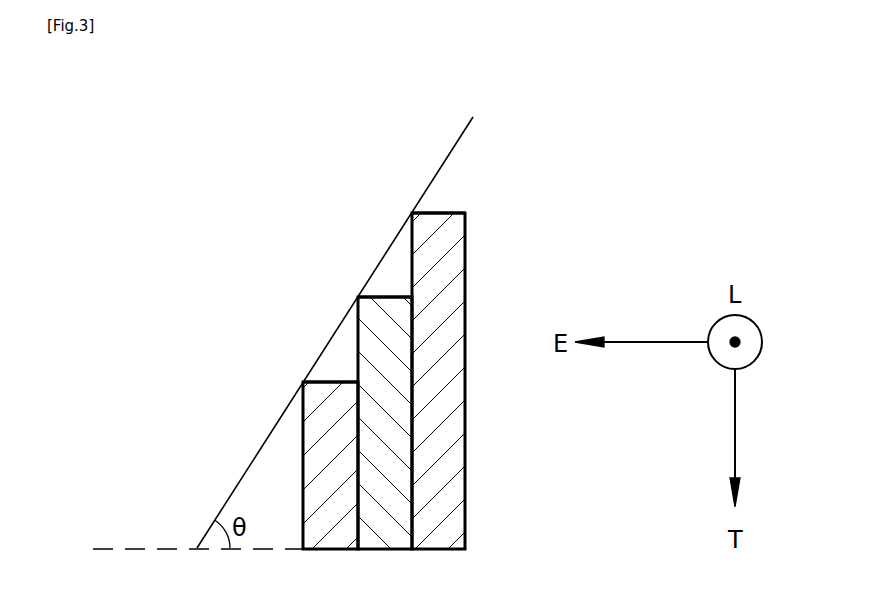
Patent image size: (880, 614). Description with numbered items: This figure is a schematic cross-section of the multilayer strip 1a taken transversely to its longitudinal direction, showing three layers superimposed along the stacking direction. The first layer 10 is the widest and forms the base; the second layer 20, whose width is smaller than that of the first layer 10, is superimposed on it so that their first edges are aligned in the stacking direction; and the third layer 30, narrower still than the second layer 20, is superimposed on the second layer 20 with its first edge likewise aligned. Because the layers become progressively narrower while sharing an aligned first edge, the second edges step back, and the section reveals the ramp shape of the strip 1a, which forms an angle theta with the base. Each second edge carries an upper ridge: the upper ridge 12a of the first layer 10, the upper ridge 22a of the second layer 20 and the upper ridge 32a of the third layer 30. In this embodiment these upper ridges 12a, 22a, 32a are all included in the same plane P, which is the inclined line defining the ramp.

The multilayer strip 1a is at (398, 382).
The first layer 10 is at (396, 382).
The second layer 20 is at (341, 423).
The third layer 30 is at (288, 466).
The upper ridge of the second edge of the first layer 12a is at (412, 213).
The upper ridge of the second edge of the second layer 22a is at (358, 297).
The upper ridge of the second edge of the third layer 32a is at (303, 382).
The plane P is at (457, 143).